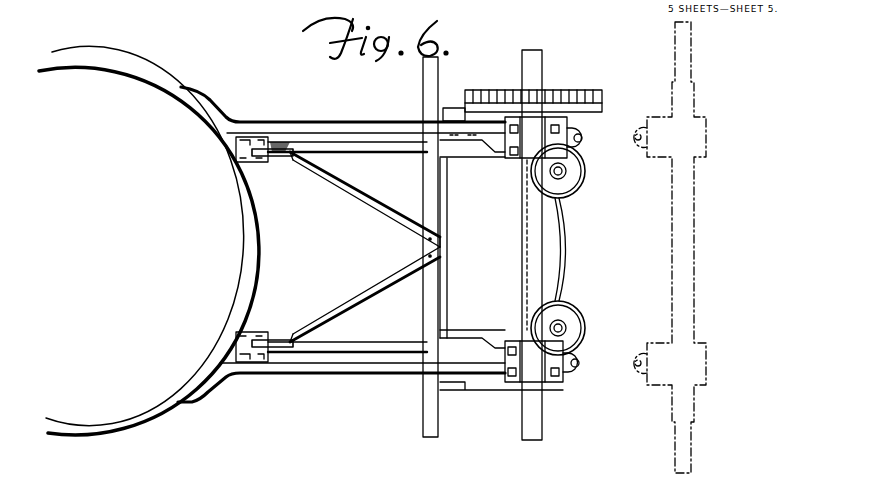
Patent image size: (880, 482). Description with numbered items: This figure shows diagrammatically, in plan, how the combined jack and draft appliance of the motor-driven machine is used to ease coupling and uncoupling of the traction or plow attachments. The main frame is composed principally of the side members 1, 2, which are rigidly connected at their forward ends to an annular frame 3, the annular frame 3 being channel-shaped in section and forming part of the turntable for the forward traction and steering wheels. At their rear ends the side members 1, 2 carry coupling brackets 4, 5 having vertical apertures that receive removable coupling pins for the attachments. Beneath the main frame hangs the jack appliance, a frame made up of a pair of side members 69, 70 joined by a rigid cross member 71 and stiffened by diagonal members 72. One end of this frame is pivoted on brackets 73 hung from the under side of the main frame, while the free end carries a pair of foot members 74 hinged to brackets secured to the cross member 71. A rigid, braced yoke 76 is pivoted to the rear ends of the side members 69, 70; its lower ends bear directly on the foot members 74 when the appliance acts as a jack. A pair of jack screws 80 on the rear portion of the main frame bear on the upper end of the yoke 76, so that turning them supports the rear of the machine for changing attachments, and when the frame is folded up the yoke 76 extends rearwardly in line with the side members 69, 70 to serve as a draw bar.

The side member 1 is at (357, 130).
The side member 2 is at (348, 373).
The annular frame 3 is at (147, 412).
The coupling bracket 4 is at (585, 135).
The coupling bracket 5 is at (584, 366).
The side member 69 is at (358, 153).
The side member 70 is at (352, 347).
The cross member 71 is at (437, 308).
The diagonal member 72 is at (367, 197).
The bracket 73 is at (270, 165).
The foot member 74 is at (485, 165).
The yoke 76 is at (553, 245).
The jack screw 80 is at (567, 173).